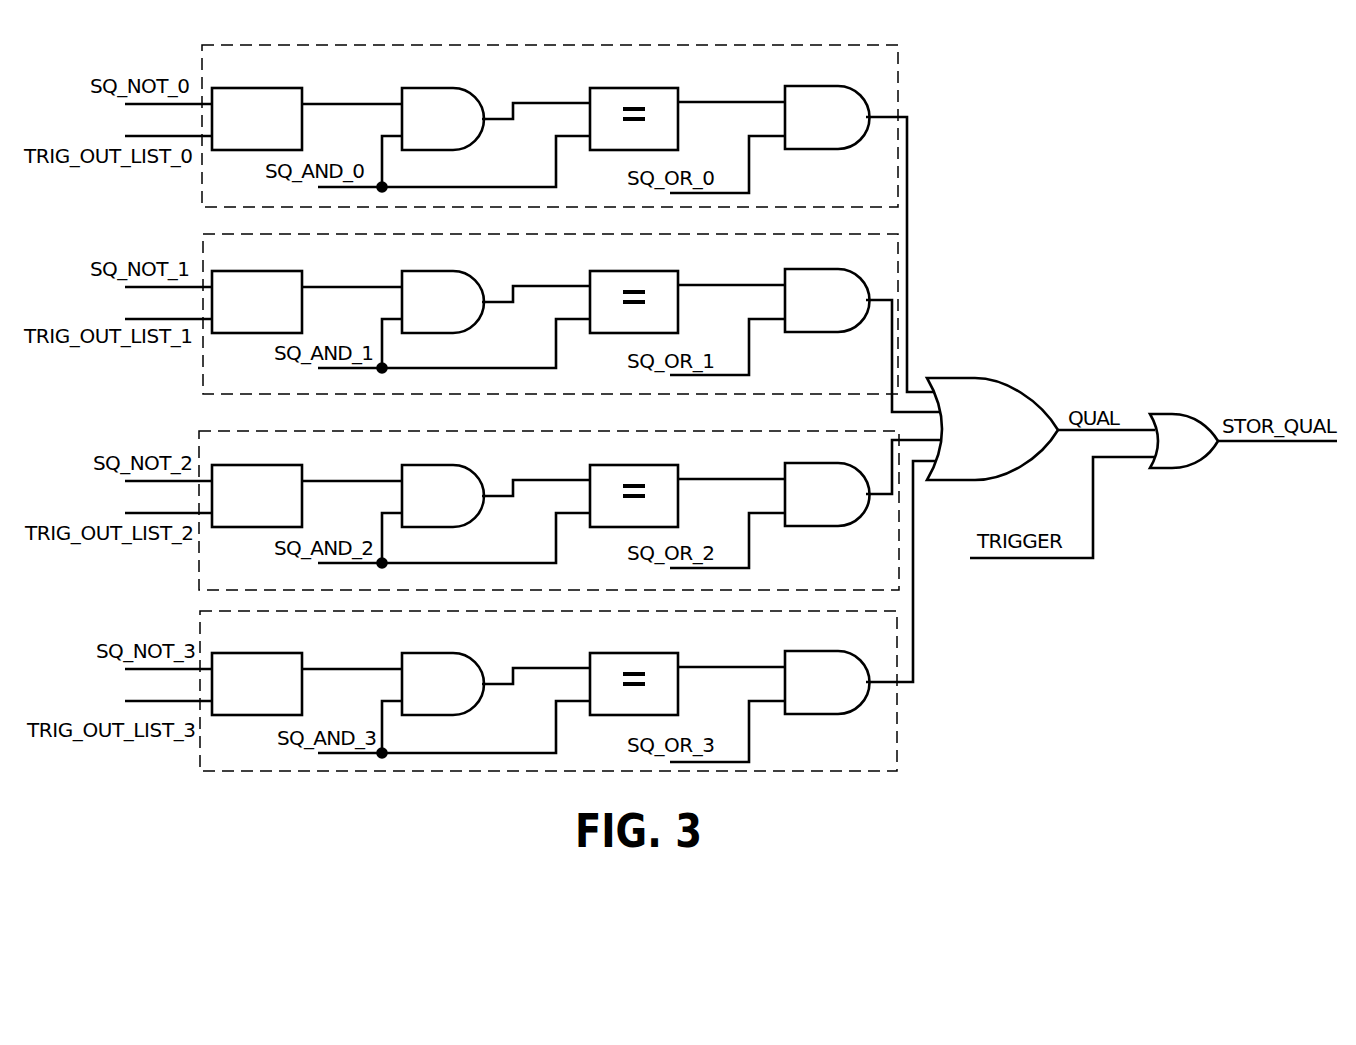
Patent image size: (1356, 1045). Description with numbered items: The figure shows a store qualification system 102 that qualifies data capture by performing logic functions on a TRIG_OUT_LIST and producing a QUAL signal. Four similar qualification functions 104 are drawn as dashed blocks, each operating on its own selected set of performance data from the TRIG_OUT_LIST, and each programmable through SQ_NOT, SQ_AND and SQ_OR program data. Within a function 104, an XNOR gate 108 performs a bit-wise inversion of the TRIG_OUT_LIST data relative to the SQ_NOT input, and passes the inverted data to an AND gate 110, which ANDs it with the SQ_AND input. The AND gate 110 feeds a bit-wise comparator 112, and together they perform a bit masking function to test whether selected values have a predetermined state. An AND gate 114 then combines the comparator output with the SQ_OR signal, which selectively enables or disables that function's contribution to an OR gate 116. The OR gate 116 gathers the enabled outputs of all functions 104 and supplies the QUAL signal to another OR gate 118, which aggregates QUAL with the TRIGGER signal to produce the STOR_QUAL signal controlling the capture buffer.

The store qualification system 102 is at (1078, 178).
The qualification function 104 is at (898, 78).
The XNOR gate 108 is at (258, 88).
The AND gate 110 is at (432, 88).
The bit-wise comparator 112 is at (625, 88).
The AND gate 114 is at (808, 86).
The OR gate 116 is at (990, 382).
The OR gate 118 is at (1165, 412).